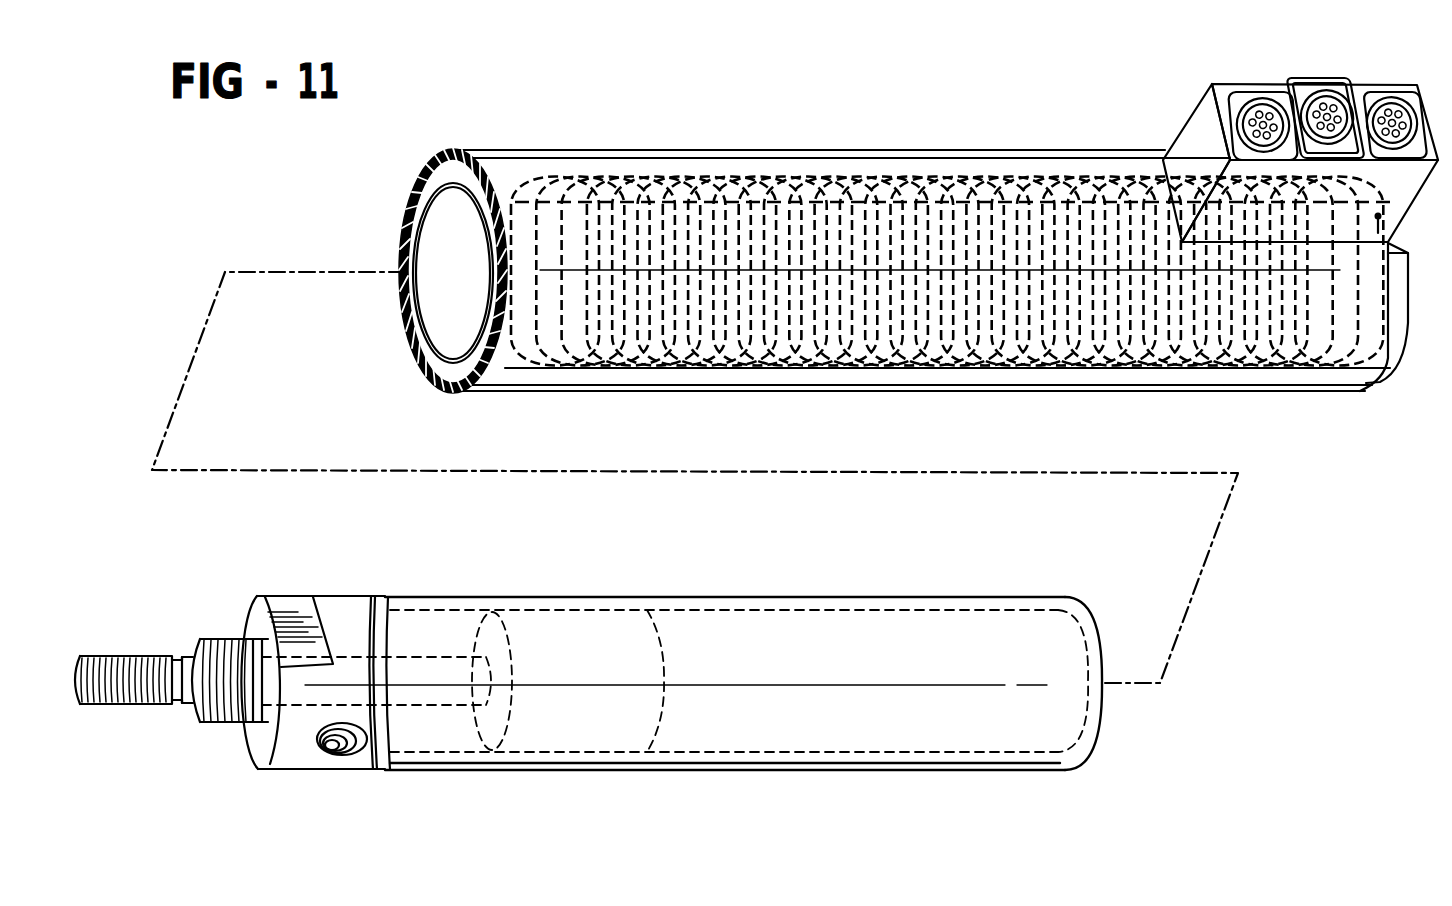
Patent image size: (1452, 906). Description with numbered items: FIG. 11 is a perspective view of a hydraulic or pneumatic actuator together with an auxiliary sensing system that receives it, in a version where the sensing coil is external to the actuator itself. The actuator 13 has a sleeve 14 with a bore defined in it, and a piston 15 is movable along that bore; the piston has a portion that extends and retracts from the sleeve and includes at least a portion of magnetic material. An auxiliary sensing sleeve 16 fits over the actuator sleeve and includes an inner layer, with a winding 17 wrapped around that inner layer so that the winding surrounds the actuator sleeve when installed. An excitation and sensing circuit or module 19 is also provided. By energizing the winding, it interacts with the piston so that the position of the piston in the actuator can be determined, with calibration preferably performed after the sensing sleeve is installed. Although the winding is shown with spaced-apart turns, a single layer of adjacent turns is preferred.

The actuator 13 is at (777, 582).
The sleeve 14 is at (540, 595).
The piston 15 is at (645, 665).
The auxiliary sensing sleeve 16 is at (747, 146).
The winding 17 is at (607, 178).
The excitation and sensing circuit or module 19 is at (1196, 132).